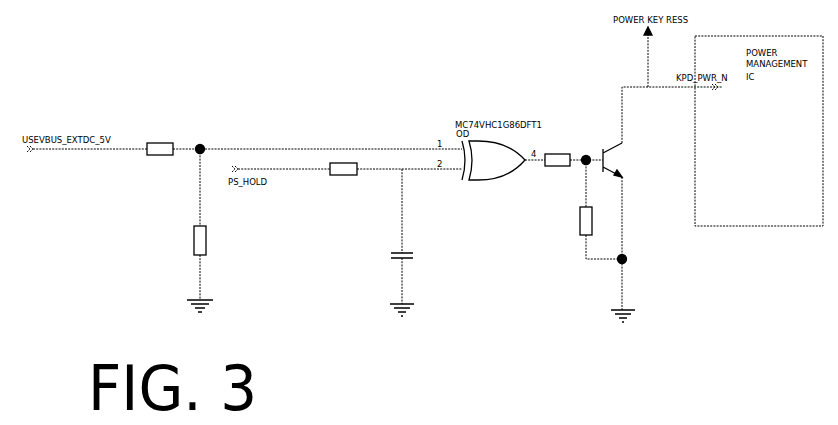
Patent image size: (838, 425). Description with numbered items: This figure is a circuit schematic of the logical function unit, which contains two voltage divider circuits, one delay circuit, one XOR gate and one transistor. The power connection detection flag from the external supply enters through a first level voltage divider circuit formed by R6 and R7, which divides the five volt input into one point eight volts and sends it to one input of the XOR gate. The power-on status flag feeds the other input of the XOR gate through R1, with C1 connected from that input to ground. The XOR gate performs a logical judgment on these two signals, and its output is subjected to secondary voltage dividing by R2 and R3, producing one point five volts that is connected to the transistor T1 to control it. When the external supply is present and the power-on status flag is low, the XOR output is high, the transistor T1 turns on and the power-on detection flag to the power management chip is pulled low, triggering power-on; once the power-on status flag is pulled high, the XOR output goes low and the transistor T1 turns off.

The first level voltage divider resistor R6 is at (160, 150).
The first level voltage divider resistor R7 is at (200, 240).
The resistor R1 1K R1 is at (343, 170).
The capacitor C1 2.2UF C1 is at (404, 255).
The secondary voltage divider resistor R2 is at (557, 161).
The secondary voltage divider resistor R3 is at (588, 221).
The transistor T1 is at (629, 155).